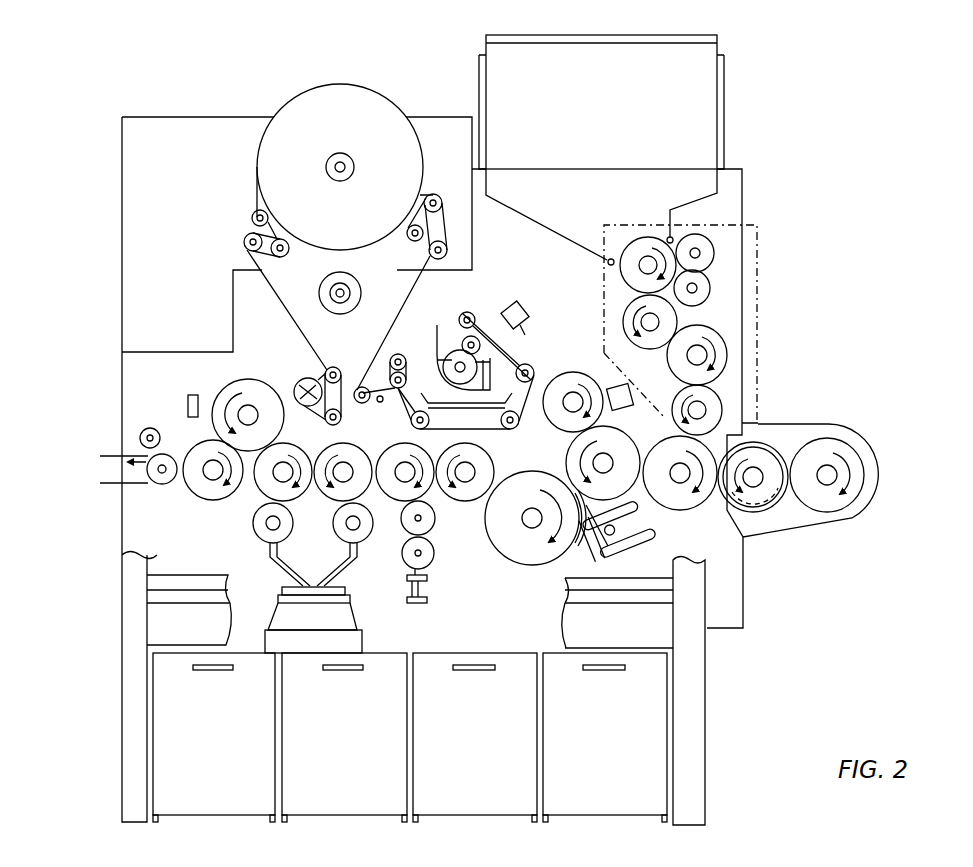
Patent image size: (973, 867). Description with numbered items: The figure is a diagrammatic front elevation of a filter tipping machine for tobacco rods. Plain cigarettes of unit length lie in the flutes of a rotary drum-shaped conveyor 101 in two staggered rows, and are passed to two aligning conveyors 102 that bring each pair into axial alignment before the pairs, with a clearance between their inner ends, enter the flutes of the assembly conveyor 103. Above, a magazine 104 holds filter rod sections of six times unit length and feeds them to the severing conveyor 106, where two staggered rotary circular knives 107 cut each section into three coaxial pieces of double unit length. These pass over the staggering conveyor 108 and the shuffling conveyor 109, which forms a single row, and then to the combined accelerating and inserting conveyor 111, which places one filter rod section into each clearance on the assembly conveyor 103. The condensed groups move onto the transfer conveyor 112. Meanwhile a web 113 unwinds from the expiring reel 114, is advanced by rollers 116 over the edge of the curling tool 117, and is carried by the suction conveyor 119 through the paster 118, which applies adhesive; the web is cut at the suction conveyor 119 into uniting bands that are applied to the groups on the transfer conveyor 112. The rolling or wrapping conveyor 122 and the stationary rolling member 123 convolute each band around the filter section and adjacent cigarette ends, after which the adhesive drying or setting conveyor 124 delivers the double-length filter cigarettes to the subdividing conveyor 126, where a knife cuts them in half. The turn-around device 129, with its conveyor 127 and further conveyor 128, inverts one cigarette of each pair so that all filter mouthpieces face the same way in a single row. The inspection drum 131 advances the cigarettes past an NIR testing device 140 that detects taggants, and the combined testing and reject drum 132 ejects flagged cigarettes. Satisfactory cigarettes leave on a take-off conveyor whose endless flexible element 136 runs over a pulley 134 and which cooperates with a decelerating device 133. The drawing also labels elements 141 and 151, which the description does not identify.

The rotary drum-shaped conveyor 101 is at (843, 442).
The aligning conveyor 102 is at (768, 455).
The assembly conveyor 103 is at (690, 507).
The magazine 104 is at (622, 113).
The severing conveyor 106 is at (640, 242).
The rotary circular knives 107 is at (708, 286).
The staggering conveyor 108 is at (628, 312).
The shuffling conveyor 109 is at (718, 335).
The combined accelerating and inserting conveyor 111 is at (718, 396).
The transfer conveyor 112 is at (570, 455).
The web 113 is at (472, 269).
The expiring reel 114 is at (343, 314).
The rollers 116 is at (396, 390).
The curling tool 117 is at (377, 402).
The paster 118 is at (448, 330).
The suction conveyor 119 is at (565, 374).
The rolling or wrapping conveyor 122 is at (518, 532).
The rolling member 123 is at (597, 554).
The adhesive drying or setting conveyor 124 is at (455, 498).
The subdividing conveyor 126 is at (428, 494).
The conveyor of turn-around device 127 is at (363, 492).
The further conveyor of turn-around device 128 is at (298, 493).
The turn-around device 129 is at (268, 575).
The inspection drum 131 is at (254, 386).
The combined testing and reject drum 132 is at (216, 500).
The decelerating device 133 is at (156, 428).
The pulley 134 is at (168, 484).
The endless flexible element 136 is at (118, 456).
The NIR testing device 140 is at (193, 394).
The sensor 141 is at (609, 388).
The belt 151 is at (525, 303).